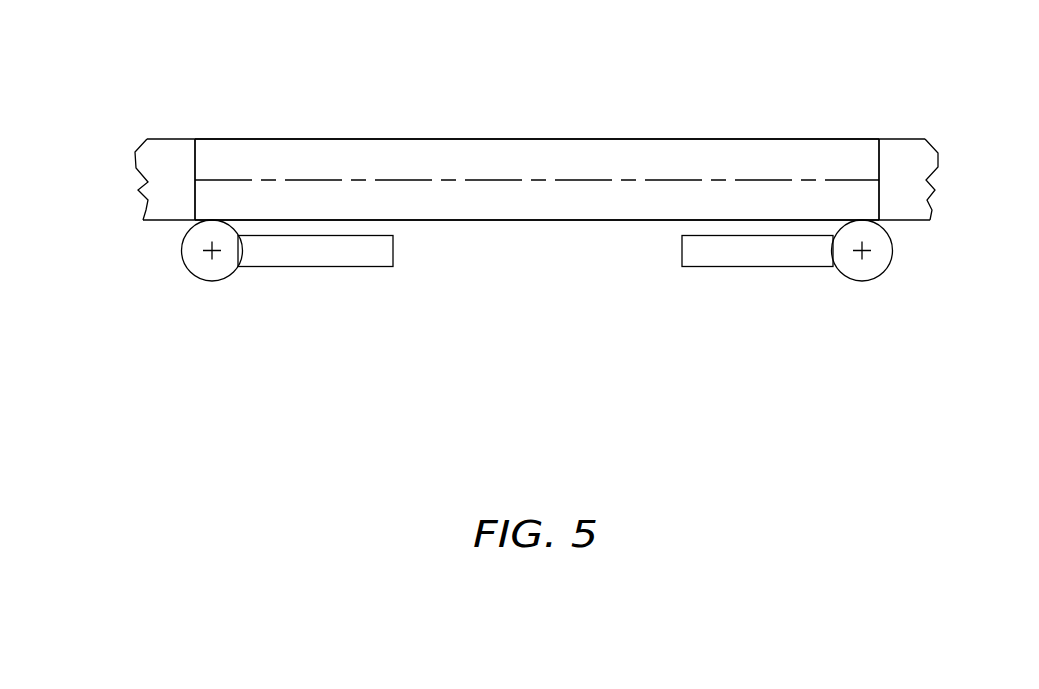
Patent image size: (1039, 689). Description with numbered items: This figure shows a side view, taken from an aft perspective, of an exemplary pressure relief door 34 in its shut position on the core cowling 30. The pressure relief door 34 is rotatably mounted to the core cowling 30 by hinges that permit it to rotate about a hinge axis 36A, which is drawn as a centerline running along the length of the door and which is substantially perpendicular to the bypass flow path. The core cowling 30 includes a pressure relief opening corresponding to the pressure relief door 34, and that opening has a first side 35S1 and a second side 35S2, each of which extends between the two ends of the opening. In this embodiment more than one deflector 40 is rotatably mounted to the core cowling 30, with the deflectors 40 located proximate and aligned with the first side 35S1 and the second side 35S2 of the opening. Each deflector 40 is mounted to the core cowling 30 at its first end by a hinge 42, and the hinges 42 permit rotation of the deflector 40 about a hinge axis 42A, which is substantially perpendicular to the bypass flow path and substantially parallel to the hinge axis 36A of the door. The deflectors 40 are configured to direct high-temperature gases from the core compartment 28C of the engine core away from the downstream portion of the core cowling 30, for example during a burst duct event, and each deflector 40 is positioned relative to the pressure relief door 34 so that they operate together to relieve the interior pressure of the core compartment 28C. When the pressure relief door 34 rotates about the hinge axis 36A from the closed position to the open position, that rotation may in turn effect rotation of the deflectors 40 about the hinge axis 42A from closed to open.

The core cowling 30 is at (908, 128).
The pressure relief door 34 is at (565, 213).
The hinge axis 36A is at (668, 180).
The core compartment 28C is at (594, 427).
The first side 35S1 is at (178, 227).
The second side 35S2 is at (893, 227).
The deflector 40 is at (307, 267).
The hinge 42 is at (213, 282).
The hinge axis 42A is at (212, 252).